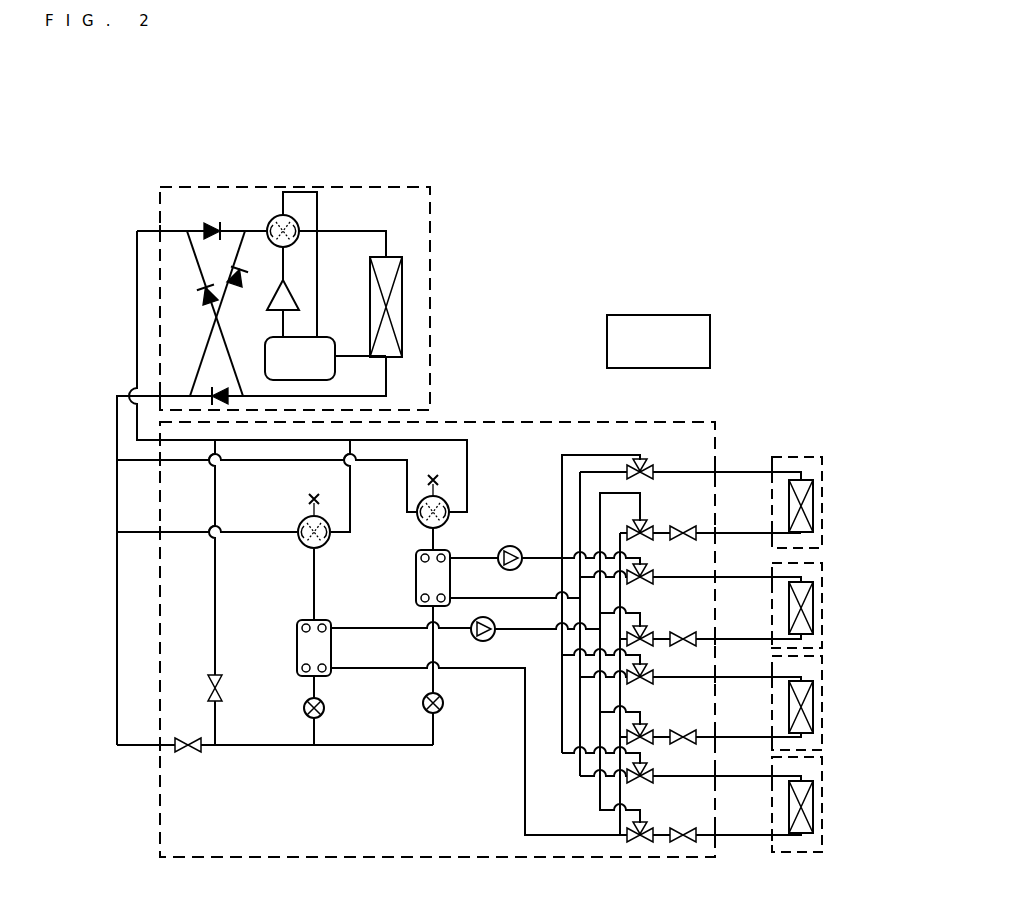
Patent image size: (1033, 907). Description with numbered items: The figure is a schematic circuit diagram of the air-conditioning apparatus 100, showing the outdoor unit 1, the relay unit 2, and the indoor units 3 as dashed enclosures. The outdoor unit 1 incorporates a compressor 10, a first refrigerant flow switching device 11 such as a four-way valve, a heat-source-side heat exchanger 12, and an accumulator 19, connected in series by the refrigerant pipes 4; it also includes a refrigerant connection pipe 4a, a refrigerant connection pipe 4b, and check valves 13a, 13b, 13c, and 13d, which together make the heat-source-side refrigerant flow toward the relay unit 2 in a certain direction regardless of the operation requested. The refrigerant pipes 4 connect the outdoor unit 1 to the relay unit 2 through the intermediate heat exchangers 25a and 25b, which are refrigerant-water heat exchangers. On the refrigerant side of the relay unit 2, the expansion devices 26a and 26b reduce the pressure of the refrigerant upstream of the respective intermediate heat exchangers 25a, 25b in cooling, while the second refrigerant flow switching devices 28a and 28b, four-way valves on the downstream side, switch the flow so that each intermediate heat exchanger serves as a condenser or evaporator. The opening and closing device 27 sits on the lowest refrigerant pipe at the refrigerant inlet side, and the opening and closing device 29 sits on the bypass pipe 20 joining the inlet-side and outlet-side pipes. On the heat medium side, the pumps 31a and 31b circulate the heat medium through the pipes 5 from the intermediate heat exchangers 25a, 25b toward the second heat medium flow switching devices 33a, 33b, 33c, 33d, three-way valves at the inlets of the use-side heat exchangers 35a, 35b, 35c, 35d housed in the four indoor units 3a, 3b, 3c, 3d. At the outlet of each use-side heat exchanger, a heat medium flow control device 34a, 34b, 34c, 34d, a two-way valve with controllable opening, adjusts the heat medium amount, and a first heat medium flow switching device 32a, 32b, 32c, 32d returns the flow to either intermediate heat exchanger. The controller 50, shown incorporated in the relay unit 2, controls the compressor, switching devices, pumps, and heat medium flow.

The air-conditioning apparatus 100 is at (508, 185).
The outdoor unit 1 is at (430, 350).
The relay unit 2 is at (490, 422).
The indoor units 3 is at (780, 457).
The indoor unit 3a is at (790, 457).
The indoor unit 3b is at (822, 585).
The indoor unit 3c is at (822, 710).
The indoor unit 3d is at (822, 815).
The refrigerant pipes 4 is at (137, 375).
The refrigerant connection pipe 4a is at (232, 262).
The refrigerant connection pipe 4b is at (222, 290).
The pipes 5 is at (762, 838).
The compressor 10 is at (302, 290).
The first refrigerant flow switching device 11 is at (300, 226).
The heat-source-side heat exchanger 12 is at (420, 265).
The check valve 13a is at (215, 310).
The check valve 13b is at (205, 312).
The check valve 13c is at (212, 224).
The check valve 13d is at (228, 273).
The accumulator 19 is at (336, 360).
The bypass pipe 20 is at (215, 598).
The intermediate heat exchanger 25a is at (297, 655).
The intermediate heat exchanger 25b is at (453, 548).
The expansion device 26a is at (305, 702).
The expansion device 26b is at (423, 700).
The opening and closing device 27 is at (192, 750).
The second refrigerant flow switching device 28a is at (303, 517).
The second refrigerant flow switching device 28b is at (418, 520).
The opening and closing device 29 is at (210, 682).
The pump 31a is at (490, 645).
The pump 31b is at (514, 572).
The first heat medium flow switching device 32a is at (650, 528).
The first heat medium flow switching device 32b is at (650, 635).
The first heat medium flow switching device 32c is at (650, 733).
The first heat medium flow switching device 32d is at (650, 832).
The second heat medium flow switching device 33a is at (652, 466).
The second heat medium flow switching device 33b is at (650, 574).
The second heat medium flow switching device 33c is at (652, 674).
The second heat medium flow switching device 33d is at (652, 774).
The heat medium flow control device 34a is at (697, 528).
The heat medium flow control device 34b is at (697, 635).
The heat medium flow control device 34c is at (697, 733).
The heat medium flow control device 34d is at (697, 832).
The use-side heat exchanger 35a is at (815, 495).
The use-side heat exchanger 35b is at (815, 615).
The use-side heat exchanger 35c is at (813, 665).
The use-side heat exchanger 35d is at (815, 790).
The controller 50 is at (677, 332).